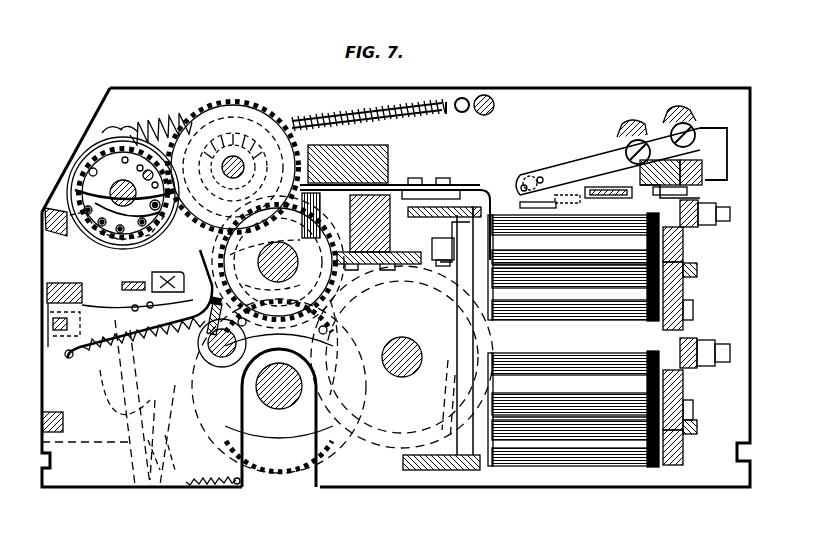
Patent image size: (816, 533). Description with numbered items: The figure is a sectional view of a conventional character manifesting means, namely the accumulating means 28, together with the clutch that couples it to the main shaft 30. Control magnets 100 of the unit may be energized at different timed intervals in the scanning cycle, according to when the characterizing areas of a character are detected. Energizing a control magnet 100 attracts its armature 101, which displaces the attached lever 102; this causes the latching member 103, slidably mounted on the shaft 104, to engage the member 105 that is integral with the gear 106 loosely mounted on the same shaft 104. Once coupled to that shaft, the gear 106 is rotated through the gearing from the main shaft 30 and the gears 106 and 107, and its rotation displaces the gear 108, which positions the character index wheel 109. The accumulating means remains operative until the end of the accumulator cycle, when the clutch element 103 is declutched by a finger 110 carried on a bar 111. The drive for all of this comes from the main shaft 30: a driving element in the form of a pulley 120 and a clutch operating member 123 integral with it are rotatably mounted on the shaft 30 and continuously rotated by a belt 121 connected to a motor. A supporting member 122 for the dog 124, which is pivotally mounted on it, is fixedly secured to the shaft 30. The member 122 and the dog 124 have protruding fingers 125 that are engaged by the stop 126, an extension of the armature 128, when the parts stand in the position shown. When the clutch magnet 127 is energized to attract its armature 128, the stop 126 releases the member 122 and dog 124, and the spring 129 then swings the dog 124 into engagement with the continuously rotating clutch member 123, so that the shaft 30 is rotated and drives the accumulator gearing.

The accumulating means 28 is at (108, 106).
The main shaft 30 is at (283, 392).
The control magnet 100 is at (609, 333).
The armature 101 is at (488, 282).
The lever 102 is at (392, 186).
The latching member 103 is at (233, 167).
The shaft 104 is at (278, 262).
The member 105 is at (213, 150).
The gear 106 is at (298, 132).
The gear 107 is at (325, 292).
The gear 108 is at (80, 163).
The character index wheel 109 is at (100, 145).
The finger 110 is at (583, 197).
The bar 111 is at (620, 197).
The pulley 120 is at (402, 357).
The belt 121 is at (449, 386).
The supporting member 122 is at (367, 393).
The clutch operating member 123 is at (345, 433).
The dog 124 is at (145, 312).
The protruding finger 125 is at (208, 332).
The stop 126 is at (135, 370).
The clutch magnet 127 is at (105, 432).
The armature 128 is at (148, 462).
The spring 129 is at (342, 313).